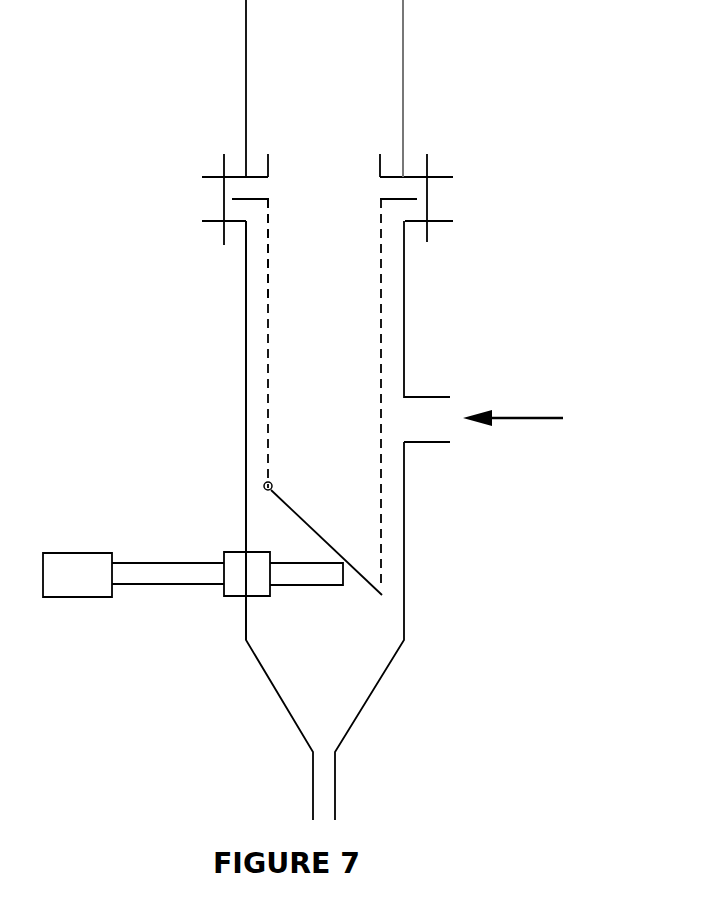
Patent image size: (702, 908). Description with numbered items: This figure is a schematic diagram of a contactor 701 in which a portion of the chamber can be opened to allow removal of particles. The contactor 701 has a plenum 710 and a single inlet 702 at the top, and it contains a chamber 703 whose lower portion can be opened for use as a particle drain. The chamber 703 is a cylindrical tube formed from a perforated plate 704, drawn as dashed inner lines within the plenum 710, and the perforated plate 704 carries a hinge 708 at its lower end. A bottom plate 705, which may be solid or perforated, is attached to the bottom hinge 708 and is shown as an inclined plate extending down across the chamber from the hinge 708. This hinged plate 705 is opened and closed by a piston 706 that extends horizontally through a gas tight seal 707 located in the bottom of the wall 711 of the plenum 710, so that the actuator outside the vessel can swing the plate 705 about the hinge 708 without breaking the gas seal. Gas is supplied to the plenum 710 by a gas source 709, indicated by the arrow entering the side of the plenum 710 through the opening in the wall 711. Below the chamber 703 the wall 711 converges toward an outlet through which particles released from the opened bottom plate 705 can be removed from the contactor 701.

The contactor 701 is at (427, 91).
The inlet 702 is at (313, 176).
The chamber 703 is at (392, 291).
The perforated plate 704 is at (267, 329).
The bottom plate 705 is at (313, 530).
The piston 706 is at (318, 587).
The gas tight seal 707 is at (224, 598).
The hinge 708 is at (263, 487).
The gas source 709 is at (527, 421).
The plenum 710 is at (262, 257).
The wall 711 is at (247, 463).